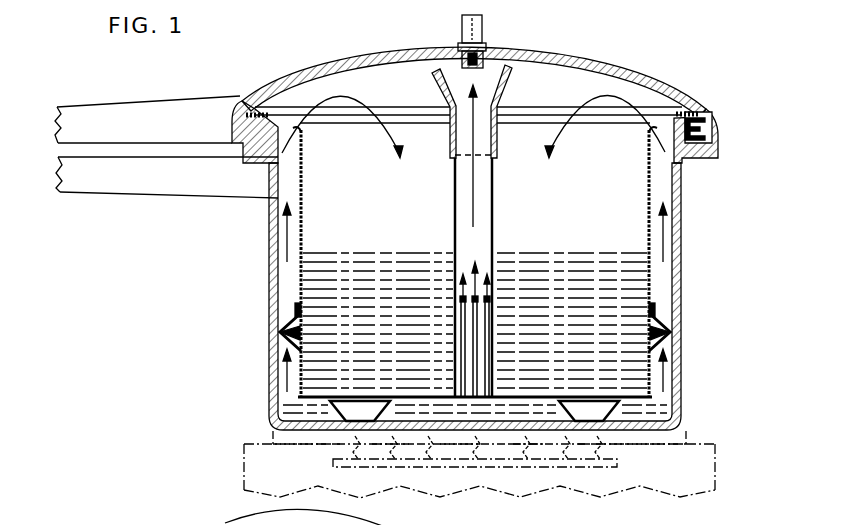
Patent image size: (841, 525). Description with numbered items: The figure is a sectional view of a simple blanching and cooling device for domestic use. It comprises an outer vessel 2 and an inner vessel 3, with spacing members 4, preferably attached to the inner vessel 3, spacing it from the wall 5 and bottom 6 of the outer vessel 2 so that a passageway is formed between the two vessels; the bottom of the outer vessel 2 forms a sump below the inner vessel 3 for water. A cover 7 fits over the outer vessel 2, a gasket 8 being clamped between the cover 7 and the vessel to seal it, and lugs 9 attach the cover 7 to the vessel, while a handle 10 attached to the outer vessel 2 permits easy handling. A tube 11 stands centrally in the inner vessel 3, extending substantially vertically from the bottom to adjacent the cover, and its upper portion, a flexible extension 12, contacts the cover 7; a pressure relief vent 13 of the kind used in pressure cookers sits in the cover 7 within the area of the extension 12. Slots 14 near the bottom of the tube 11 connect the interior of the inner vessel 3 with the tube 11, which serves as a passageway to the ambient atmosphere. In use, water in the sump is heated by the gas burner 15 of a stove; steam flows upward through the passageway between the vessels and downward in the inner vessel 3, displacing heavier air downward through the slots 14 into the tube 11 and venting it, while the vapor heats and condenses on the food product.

The outer vessel 2 is at (681, 215).
The inner vessel 3 is at (652, 247).
The spacing members 4 is at (660, 313).
The wall 5 is at (283, 247).
The bottom 6 is at (655, 415).
The cover 7 is at (597, 62).
The gasket 8 is at (680, 112).
The lugs 9 is at (703, 120).
The handle 10 is at (145, 178).
The tube 11 is at (455, 216).
The flexible extension 12 is at (525, 80).
The pressure relief vent 13 is at (480, 31).
The slots 14 is at (483, 306).
The gas burner 15 is at (592, 460).